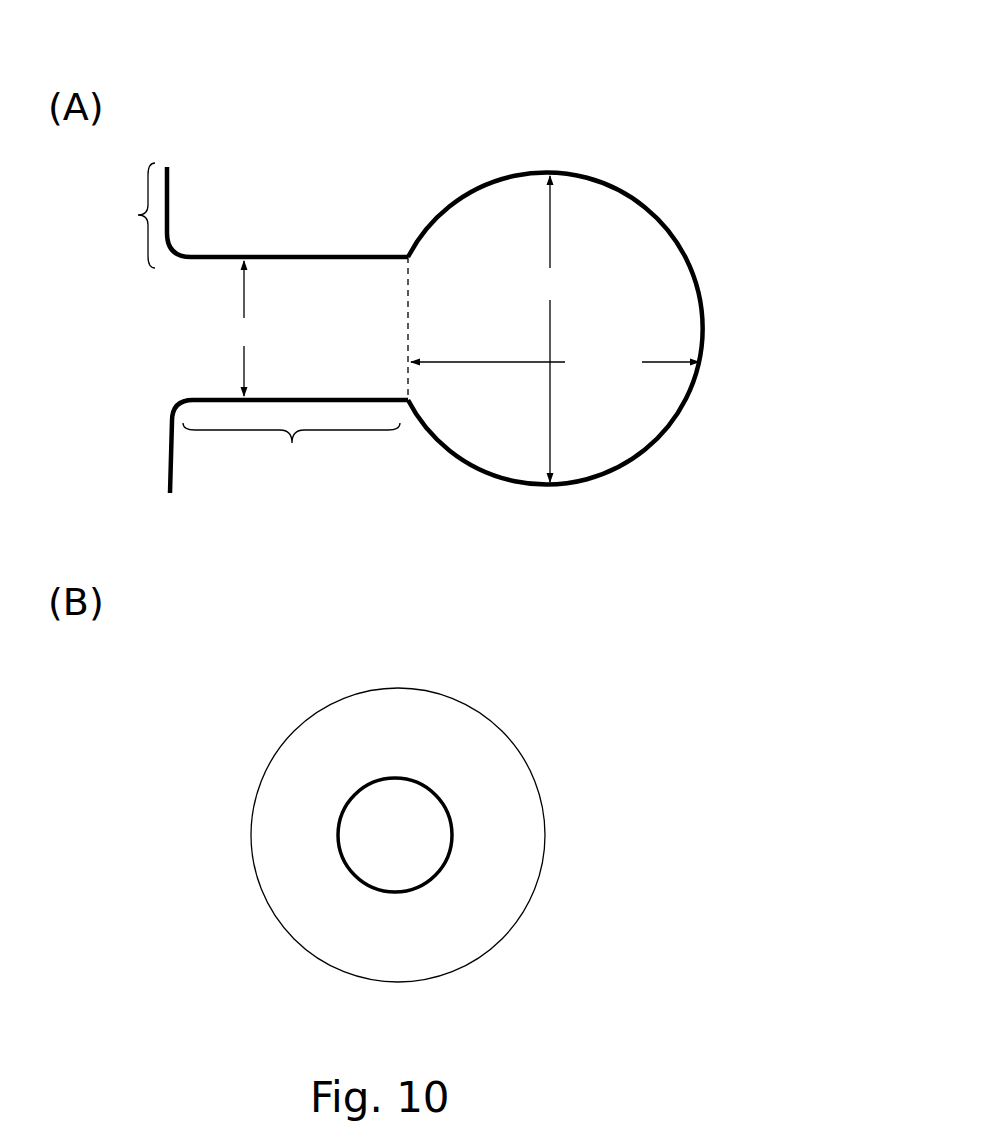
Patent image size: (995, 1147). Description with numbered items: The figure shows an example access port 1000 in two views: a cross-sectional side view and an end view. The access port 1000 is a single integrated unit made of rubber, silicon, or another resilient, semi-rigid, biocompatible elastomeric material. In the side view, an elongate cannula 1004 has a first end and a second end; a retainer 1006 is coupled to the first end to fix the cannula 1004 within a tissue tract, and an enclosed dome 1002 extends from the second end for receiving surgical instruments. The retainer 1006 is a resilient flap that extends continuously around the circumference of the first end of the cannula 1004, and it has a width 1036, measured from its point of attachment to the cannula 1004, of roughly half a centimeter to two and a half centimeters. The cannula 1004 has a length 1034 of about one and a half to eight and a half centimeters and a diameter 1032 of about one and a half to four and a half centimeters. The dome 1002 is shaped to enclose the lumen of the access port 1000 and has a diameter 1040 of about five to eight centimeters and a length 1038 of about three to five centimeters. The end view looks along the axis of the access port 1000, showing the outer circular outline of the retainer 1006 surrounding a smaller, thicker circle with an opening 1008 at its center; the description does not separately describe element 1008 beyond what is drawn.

In FIG. 10A, the access port 1000 is at (358, 100).
In FIG. 10A, the dome 1002 is at (518, 172).
In FIG. 10A, the elongate cannula 1004 is at (210, 257).
In FIG. 10A, the retainer 1006 is at (168, 212).
In FIG. 10B, the retainer 1006 is at (305, 722).
In FIG. 10B, the opening 1008 is at (361, 837).
In FIG. 10A, the diameter 1032 is at (243, 328).
In FIG. 10A, the length 1034 is at (291, 455).
In FIG. 10A, the width 1036 is at (105, 215).
In FIG. 10A, the length 1038 is at (555, 362).
In FIG. 10A, the diameter 1040 is at (546, 329).